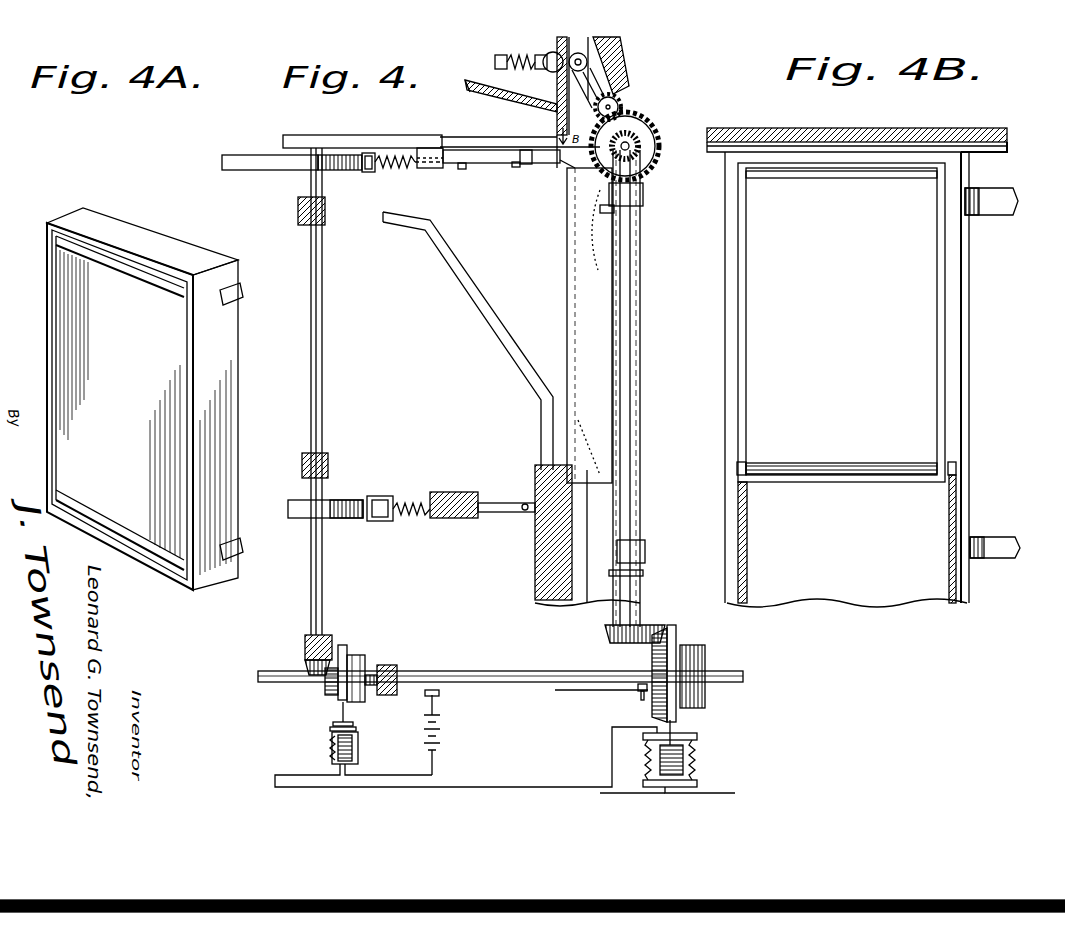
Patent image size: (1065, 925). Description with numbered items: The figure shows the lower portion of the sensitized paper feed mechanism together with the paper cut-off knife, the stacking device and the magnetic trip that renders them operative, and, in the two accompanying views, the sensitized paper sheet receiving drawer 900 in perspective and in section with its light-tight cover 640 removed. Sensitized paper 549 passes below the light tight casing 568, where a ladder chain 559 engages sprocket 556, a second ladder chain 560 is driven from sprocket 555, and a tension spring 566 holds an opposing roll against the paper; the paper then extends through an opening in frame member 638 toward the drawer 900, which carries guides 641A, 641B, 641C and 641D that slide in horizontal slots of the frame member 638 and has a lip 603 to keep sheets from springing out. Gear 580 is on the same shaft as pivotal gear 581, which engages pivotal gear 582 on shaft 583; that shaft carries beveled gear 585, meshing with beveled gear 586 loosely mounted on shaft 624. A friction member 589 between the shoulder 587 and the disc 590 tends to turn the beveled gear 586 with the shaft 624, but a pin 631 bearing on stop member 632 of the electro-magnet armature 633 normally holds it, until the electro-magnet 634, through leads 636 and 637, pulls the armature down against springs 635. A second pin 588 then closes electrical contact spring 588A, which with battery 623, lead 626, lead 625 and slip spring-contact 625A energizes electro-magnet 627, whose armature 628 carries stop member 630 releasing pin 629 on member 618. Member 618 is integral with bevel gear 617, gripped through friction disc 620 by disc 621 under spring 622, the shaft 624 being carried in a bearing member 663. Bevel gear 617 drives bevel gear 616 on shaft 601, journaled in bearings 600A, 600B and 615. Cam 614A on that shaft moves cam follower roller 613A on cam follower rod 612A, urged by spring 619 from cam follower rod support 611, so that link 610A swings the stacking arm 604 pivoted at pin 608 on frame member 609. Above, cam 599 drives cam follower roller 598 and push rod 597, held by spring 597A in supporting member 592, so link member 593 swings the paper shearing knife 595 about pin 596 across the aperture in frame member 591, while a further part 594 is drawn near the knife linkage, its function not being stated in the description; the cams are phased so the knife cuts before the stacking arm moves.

In FIG. 4, the sensitized paper 549 is at (511, 103).
In FIG. 4, the sprocket 555 is at (630, 88).
In FIG. 4, the sprocket 556 is at (641, 107).
In FIG. 4, the ladder chain 559 is at (627, 55).
In FIG. 4, the second ladder chain 560 is at (639, 65).
In FIG. 4, the tension spring 566 is at (529, 71).
In FIG. 4, the light tight casing 568 is at (446, 97).
In FIG. 4, the gear 580 is at (648, 146).
In FIG. 4, the pivotal gear 581 is at (682, 123).
In FIG. 4, the pivotal gear 582 is at (692, 137).
In FIG. 4, the shaft 583 is at (658, 381).
In FIG. 4, the beveled gear 585 is at (655, 616).
In FIG. 4, the beveled gear 586 is at (627, 675).
In FIG. 4, the shoulder 587 is at (699, 668).
In FIG. 4, the second pin 588 is at (605, 703).
In FIG. 4, the electrical contact spring 588A is at (595, 697).
In FIG. 4, the friction member 589 is at (721, 672).
In FIG. 4, the disc 590 is at (745, 692).
In FIG. 4, the frame member 591 is at (362, 131).
In FIG. 4, the supporting member 592 is at (488, 145).
In FIG. 4, the link member 593 is at (469, 173).
In FIG. 4, the link 594 is at (593, 203).
In FIG. 4, the paper shearing knife 595 is at (536, 158).
In FIG. 4, the pin 596 is at (530, 176).
In FIG. 4, the push rod 597 is at (401, 184).
In FIG. 4, the spring 597A is at (445, 181).
In FIG. 4, the cam follower roller 598 is at (358, 175).
In FIG. 4, the second cam 599 is at (300, 166).
In FIG. 4, the bearing 600A is at (272, 203).
In FIG. 4, the bearing 600B is at (289, 450).
In FIG. 4, the shaft 601 is at (343, 391).
In FIG. 4A, the lip 603 is at (119, 405).
In FIG. 4, the lip 603 is at (539, 189).
In FIG. 4B, the lip 603 is at (841, 322).
In FIG. 4, the stacking arm 604 is at (468, 341).
In FIG. 4, the pin 608 is at (512, 456).
In FIG. 4, the frame member 609 is at (516, 532).
In FIG. 4, the link 610A is at (499, 521).
In FIG. 4, the cam follower rod support 611 is at (457, 496).
In FIG. 4, the cam follower rod 612A is at (437, 475).
In FIG. 4, the cam follower roller 613A is at (387, 498).
In FIG. 4, the cam 614A is at (340, 481).
In FIG. 4, the bearing 615 is at (286, 646).
In FIG. 4, the bevel gear 616 is at (285, 664).
In FIG. 4, the bevel gear 617 is at (299, 691).
In FIG. 4, the member 618 is at (366, 661).
In FIG. 4, the spring 619 is at (410, 522).
In FIG. 4, the friction disc 620 is at (378, 669).
In FIG. 4, the disc 621 is at (398, 670).
In FIG. 4, the spring 622 is at (380, 697).
In FIG. 4, the battery 623 is at (459, 735).
In FIG. 4, the shaft 624 is at (536, 671).
In FIG. 4, the lead 625 is at (466, 757).
In FIG. 4, the slip spring-contact 625A is at (575, 732).
In FIG. 4, the lead 626 is at (380, 797).
In FIG. 4, the electro-magnet 627 is at (371, 748).
In FIG. 4, the armature 628 is at (308, 745).
In FIG. 4, the pin 629 is at (306, 720).
In FIG. 4, the stop member 630 is at (530, 640).
In FIG. 4, the pin 631 is at (705, 729).
In FIG. 4, the stop member 632 is at (701, 742).
In FIG. 4, the electro-magnet armature 633 is at (712, 760).
In FIG. 4, the electro-magnet 634 is at (623, 776).
In FIG. 4, the springs 635 is at (650, 763).
In FIG. 4, the lead 636 is at (645, 795).
In FIG. 4, the lead 637 is at (748, 794).
In FIG. 4, the frame member 638 is at (654, 388).
In FIG. 4B, the frame member 638 is at (997, 264).
In FIG. 4, the light-tight cover 640 is at (587, 555).
In FIG. 4B, the light-tight cover 640 is at (886, 539).
In FIG. 4A, the guide 641A is at (257, 302).
In FIG. 4B, the guide 641A is at (1006, 192).
In FIG. 4A, the guide 641B is at (259, 559).
In FIG. 4B, the guide 641B is at (998, 465).
In FIG. 4, the guide 641C is at (660, 208).
In FIG. 4B, the guide 641C is at (995, 547).
In FIG. 4B, the guide 641D is at (708, 465).
In FIG. 4, the bearing member 663 is at (417, 703).
In FIG. 4A, the sensitized paper sheet receiving drawer 900 is at (145, 412).
In FIG. 4, the sensitized paper sheet receiving drawer 900 is at (554, 325).
In FIG. 4B, the sensitized paper sheet receiving drawer 900 is at (825, 322).